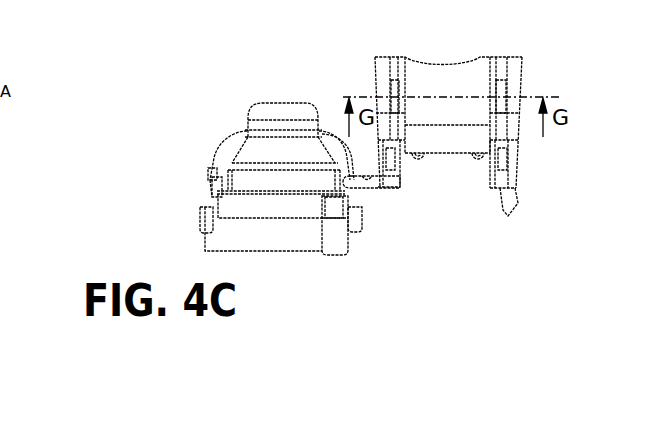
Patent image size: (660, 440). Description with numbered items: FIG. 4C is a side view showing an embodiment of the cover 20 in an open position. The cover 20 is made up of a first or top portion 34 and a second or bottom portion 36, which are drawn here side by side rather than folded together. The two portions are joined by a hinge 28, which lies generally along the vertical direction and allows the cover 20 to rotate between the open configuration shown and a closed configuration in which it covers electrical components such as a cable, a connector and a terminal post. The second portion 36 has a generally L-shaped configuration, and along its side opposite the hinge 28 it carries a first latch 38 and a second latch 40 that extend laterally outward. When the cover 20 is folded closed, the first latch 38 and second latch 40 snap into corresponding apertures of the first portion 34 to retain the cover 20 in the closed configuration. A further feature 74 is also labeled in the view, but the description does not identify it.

The cover 20 is at (580, 64).
The hinge 28 is at (365, 189).
The first portion 34 is at (288, 258).
The second portion 36 is at (507, 47).
The first latch 38 is at (513, 204).
The second latch 40 is at (544, 230).
The cap 74 is at (277, 102).